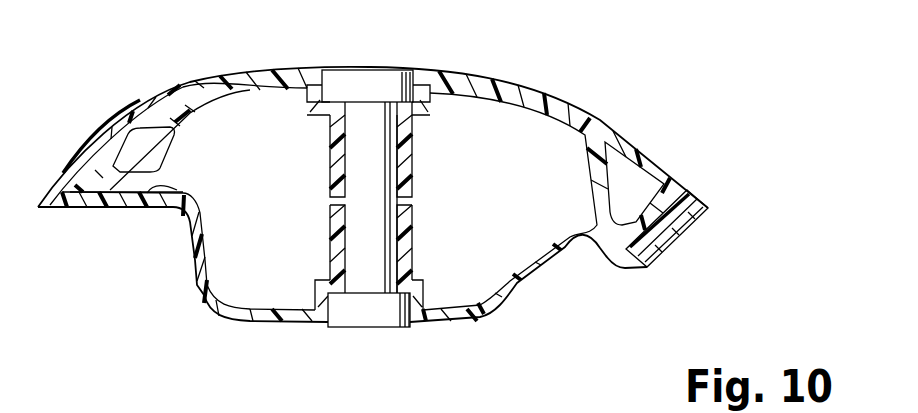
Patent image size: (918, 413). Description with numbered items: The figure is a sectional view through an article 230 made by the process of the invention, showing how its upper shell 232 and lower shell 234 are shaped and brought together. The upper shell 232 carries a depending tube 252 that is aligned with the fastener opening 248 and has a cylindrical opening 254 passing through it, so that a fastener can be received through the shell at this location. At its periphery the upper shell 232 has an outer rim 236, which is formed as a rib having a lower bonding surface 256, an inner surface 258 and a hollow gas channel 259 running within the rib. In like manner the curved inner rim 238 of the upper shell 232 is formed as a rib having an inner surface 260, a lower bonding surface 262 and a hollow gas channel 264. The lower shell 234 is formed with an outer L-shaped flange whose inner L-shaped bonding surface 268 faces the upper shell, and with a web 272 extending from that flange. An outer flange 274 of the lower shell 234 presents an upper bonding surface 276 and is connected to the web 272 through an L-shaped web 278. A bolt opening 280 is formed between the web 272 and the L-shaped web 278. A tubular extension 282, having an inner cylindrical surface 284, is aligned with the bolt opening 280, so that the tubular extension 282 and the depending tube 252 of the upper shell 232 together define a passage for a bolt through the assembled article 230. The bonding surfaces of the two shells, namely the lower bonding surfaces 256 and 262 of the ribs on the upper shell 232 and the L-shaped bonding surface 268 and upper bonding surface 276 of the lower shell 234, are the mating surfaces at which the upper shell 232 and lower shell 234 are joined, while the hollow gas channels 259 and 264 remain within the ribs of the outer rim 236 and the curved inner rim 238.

The article 230 is at (625, 101).
The upper shell 232 is at (627, 127).
The lower shell 234 is at (540, 287).
The outer rim 236 is at (113, 122).
The curved inner rim 238 is at (650, 148).
The fastener opening 248 is at (397, 72).
The depending tube 252 is at (413, 173).
The cylindrical opening 254 is at (387, 133).
The lower bonding surface 256 is at (97, 200).
The inner surface 258 is at (240, 118).
The hollow gas channel 259 is at (180, 155).
The inner surface 260 is at (582, 166).
The lower bonding surface 262 is at (693, 230).
The hollow gas channel 264 is at (660, 184).
The inner L-shaped bonding surface 268 is at (613, 262).
The web 272 is at (493, 315).
The outer flange 274 is at (140, 207).
The upper bonding surface 276 is at (173, 187).
The L-shaped web 278 is at (273, 323).
The bolt opening 280 is at (397, 313).
The tubular extension 282 is at (413, 248).
The inner cylindrical surface 284 is at (397, 230).